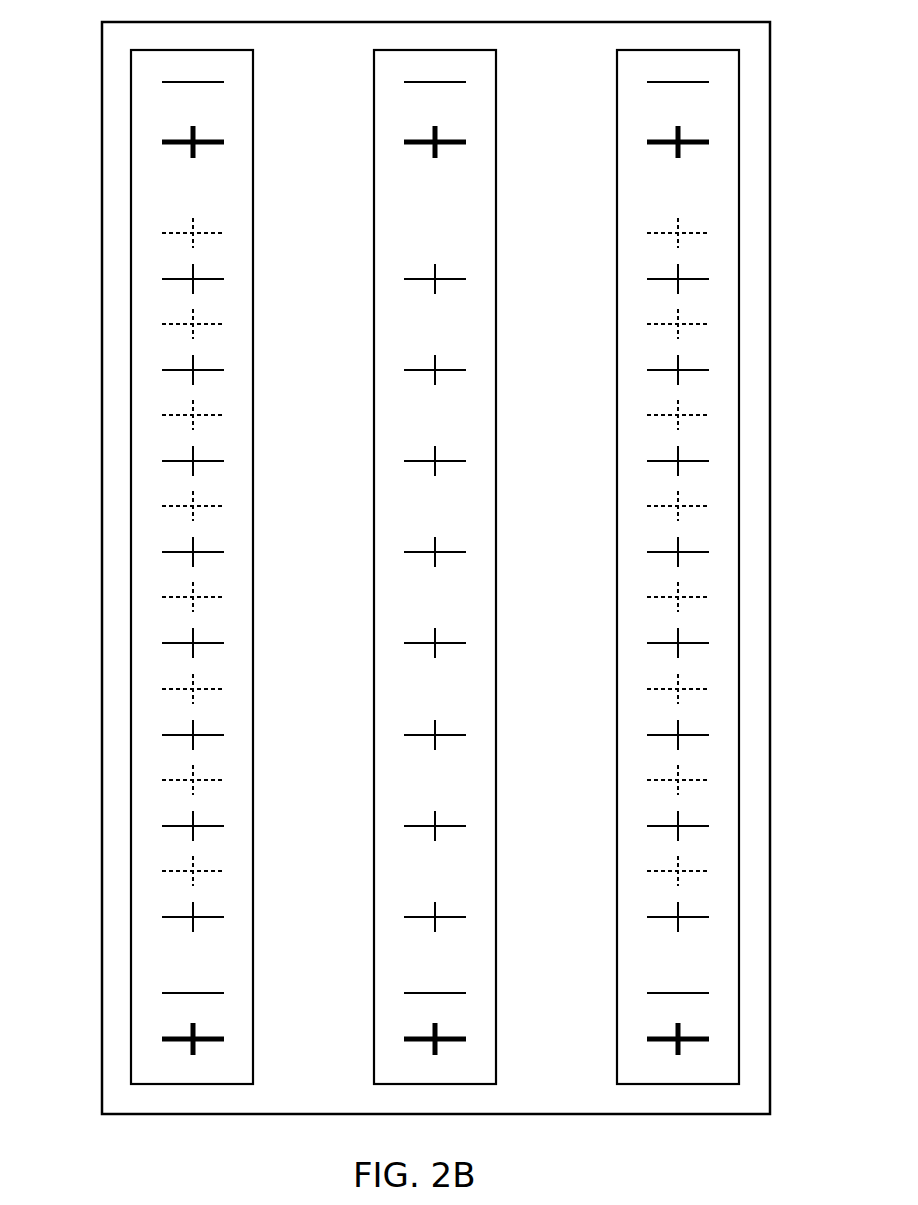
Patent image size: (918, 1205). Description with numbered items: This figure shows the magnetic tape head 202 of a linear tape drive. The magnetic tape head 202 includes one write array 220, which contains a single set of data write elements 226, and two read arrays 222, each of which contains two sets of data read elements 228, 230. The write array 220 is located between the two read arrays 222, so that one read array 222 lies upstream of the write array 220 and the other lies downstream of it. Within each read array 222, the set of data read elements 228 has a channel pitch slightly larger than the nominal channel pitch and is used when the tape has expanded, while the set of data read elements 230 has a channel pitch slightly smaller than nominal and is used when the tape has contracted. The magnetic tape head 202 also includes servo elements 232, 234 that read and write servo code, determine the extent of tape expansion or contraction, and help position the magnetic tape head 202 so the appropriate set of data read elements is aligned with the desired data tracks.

The magnetic tape head 202 is at (432, 1148).
The write array 220 is at (435, 50).
The read arrays 222 is at (192, 50).
The data write elements 226 is at (423, 279).
The data read elements 228 is at (178, 233).
The data read elements 230 is at (178, 279).
The servo element 232 is at (178, 81).
The servo element 234 is at (176, 142).